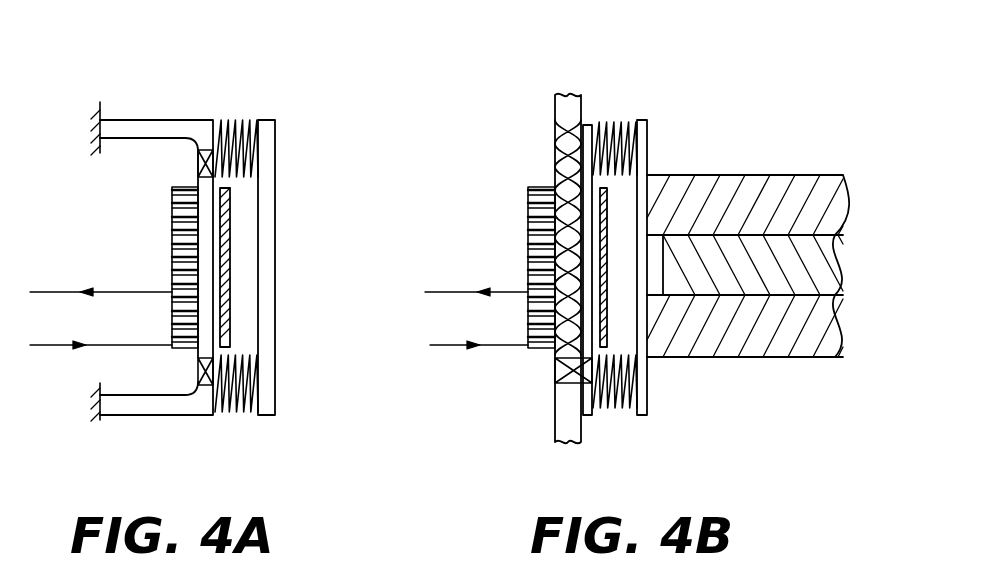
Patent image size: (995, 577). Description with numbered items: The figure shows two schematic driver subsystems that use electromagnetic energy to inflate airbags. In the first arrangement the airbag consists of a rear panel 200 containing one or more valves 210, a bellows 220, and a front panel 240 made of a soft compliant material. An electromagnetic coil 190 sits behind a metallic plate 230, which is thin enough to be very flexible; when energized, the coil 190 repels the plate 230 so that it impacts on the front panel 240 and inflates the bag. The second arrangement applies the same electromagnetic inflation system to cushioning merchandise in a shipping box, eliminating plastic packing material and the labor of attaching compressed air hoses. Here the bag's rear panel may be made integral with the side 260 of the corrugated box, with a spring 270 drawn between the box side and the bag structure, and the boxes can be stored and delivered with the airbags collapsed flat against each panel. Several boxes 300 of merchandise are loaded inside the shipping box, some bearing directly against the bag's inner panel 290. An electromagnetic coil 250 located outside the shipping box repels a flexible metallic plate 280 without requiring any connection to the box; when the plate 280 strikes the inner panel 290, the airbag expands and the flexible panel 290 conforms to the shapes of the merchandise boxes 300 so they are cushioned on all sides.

In FIG. 4A, the electromagnetic coil 190 is at (172, 235).
In FIG. 4A, the rear panel 200 is at (138, 120).
In FIG. 4A, the valve 210 is at (207, 150).
In FIG. 4A, the bellows 220 is at (237, 120).
In FIG. 4A, the metallic plate 230 is at (230, 263).
In FIG. 4A, the front panel 240 is at (275, 337).
In FIG. 4B, the electromagnetic coil 250 is at (528, 222).
In FIG. 4B, the side of the corrugated box 260 is at (555, 130).
In FIG. 4B, the spring 270 is at (608, 122).
In FIG. 4B, the flexible metallic plate 280 is at (607, 233).
In FIG. 4B, the inner panel 290 is at (647, 375).
In FIG. 4B, the boxes of merchandise 300 is at (782, 175).